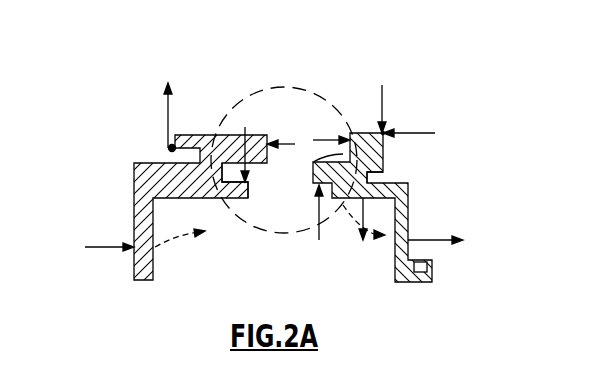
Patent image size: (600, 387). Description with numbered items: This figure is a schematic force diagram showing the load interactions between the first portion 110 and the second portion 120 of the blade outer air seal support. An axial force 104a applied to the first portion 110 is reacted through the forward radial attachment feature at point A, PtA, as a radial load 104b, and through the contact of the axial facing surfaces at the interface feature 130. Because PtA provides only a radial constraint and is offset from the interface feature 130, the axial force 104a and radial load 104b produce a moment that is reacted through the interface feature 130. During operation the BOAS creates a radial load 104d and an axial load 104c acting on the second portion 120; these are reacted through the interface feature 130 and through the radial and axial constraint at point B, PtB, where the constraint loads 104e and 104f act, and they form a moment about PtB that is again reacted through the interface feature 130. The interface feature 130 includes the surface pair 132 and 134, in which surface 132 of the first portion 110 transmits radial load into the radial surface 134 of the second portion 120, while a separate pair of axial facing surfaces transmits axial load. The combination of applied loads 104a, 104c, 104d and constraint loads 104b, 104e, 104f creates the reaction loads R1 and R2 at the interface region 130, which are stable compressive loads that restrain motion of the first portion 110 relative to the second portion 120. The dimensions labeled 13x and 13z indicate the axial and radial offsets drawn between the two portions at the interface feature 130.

The first portion 110 is at (134, 180).
The second portion 120 is at (409, 191).
The interface feature 130 is at (268, 84).
The surface 132 is at (238, 184).
The radial surface 134 is at (368, 177).
The axial force 104a is at (112, 247).
The radial load 104b is at (168, 108).
The axial load 104c is at (433, 240).
The radial load 104d is at (362, 240).
The constraint load 104e is at (383, 88).
The constraint load 104f is at (418, 134).
The point A PtA is at (153, 134).
The point B PtB is at (385, 132).
The reaction load R1 is at (282, 187).
The reaction load R2 is at (327, 126).
The gap in x direction 13x is at (268, 170).
The gap in z direction 13z is at (268, 150).